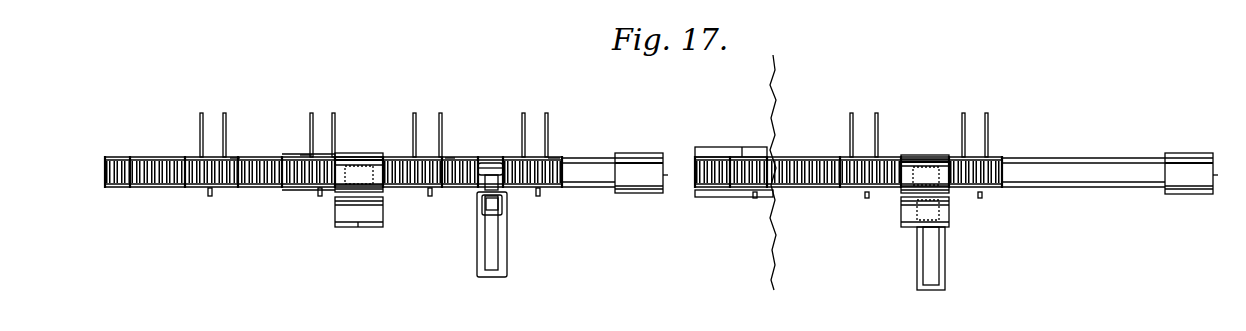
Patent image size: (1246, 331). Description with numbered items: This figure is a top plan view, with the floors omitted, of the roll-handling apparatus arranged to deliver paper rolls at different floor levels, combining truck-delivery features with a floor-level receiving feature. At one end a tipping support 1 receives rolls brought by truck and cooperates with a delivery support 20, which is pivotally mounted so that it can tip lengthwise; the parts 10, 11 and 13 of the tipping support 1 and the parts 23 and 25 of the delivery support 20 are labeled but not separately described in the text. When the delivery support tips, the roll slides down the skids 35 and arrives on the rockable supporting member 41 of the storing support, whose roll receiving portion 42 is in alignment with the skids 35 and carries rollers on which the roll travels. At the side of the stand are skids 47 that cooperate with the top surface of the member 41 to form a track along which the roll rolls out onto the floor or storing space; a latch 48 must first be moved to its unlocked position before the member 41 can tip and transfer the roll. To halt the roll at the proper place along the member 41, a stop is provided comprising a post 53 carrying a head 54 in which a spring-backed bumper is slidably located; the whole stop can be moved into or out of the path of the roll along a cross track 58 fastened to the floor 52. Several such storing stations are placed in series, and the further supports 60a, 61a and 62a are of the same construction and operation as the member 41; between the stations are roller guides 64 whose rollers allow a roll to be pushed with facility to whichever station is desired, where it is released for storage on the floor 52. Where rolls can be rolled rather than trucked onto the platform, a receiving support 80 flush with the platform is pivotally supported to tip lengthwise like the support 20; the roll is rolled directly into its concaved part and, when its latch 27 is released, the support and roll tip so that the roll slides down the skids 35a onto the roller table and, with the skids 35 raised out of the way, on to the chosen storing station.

The tipping support 1 is at (371, 214).
The base member 10 is at (338, 224).
The cover member 11 is at (340, 204).
The support column 13 is at (360, 226).
The delivery support 20 is at (368, 166).
The top plate 23 is at (360, 153).
The bottom plate 25 is at (343, 153).
The latch 27 is at (667, 169).
The skids 35 is at (306, 188).
The skids 35a is at (590, 186).
The rockable supporting member 41 is at (553, 160).
The roll receiving portion 42 is at (207, 176).
The skids 47 is at (203, 113).
The latch 48 is at (211, 196).
The floor 52 is at (773, 243).
The post 53 is at (502, 205).
The head 54 is at (484, 181).
The cross track 58 is at (491, 243).
The roller section 60a is at (452, 160).
The roller section 61a is at (312, 155).
The roller section 62a is at (258, 145).
The roller guides 64 is at (492, 162).
The receiving support 80 is at (657, 186).